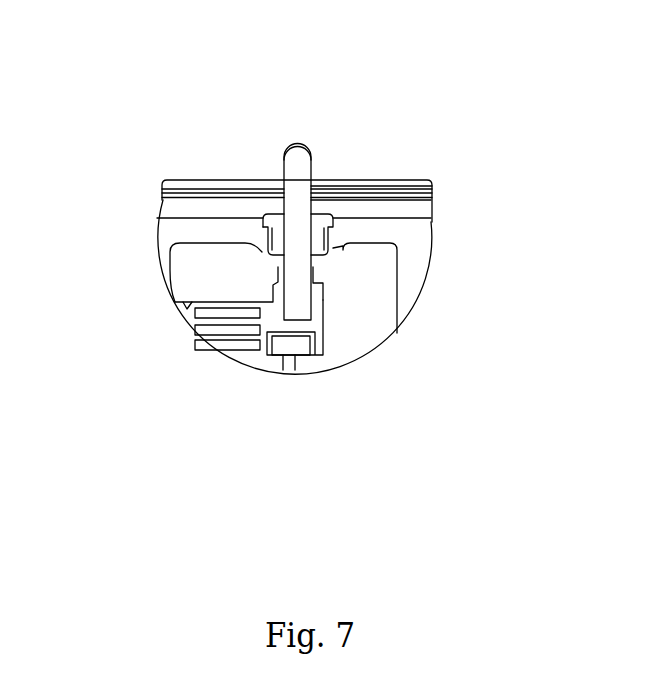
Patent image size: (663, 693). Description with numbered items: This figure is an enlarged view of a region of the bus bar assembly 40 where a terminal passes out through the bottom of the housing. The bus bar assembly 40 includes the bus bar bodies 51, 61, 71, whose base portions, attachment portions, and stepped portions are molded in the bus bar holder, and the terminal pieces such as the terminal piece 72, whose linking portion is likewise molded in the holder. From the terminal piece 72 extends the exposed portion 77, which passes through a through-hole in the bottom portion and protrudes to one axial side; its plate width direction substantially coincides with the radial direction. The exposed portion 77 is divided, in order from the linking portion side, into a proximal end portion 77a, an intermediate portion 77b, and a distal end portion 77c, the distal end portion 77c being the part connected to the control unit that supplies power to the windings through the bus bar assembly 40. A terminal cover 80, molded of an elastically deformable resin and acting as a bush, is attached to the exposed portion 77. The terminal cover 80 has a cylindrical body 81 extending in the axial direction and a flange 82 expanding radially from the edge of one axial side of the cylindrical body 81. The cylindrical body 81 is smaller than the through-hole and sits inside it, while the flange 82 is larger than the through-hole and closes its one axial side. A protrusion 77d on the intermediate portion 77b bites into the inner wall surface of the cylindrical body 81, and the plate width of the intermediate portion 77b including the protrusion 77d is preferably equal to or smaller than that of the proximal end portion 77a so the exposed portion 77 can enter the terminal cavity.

The bus bar assembly 40 is at (323, 322).
The bus bar body 51 is at (210, 329).
The bus bar body 61 is at (233, 313).
The bus bar body 71 is at (253, 343).
The terminal piece 72 is at (429, 165).
The exposed portion 77 is at (311, 168).
The proximal end portion 77a is at (313, 277).
The intermediate portion 77b is at (320, 198).
The distal end portion 77c is at (307, 148).
The protrusion 77d is at (330, 246).
The terminal cover 80 is at (262, 252).
The cylindrical body 81 is at (263, 240).
The flange 82 is at (263, 216).